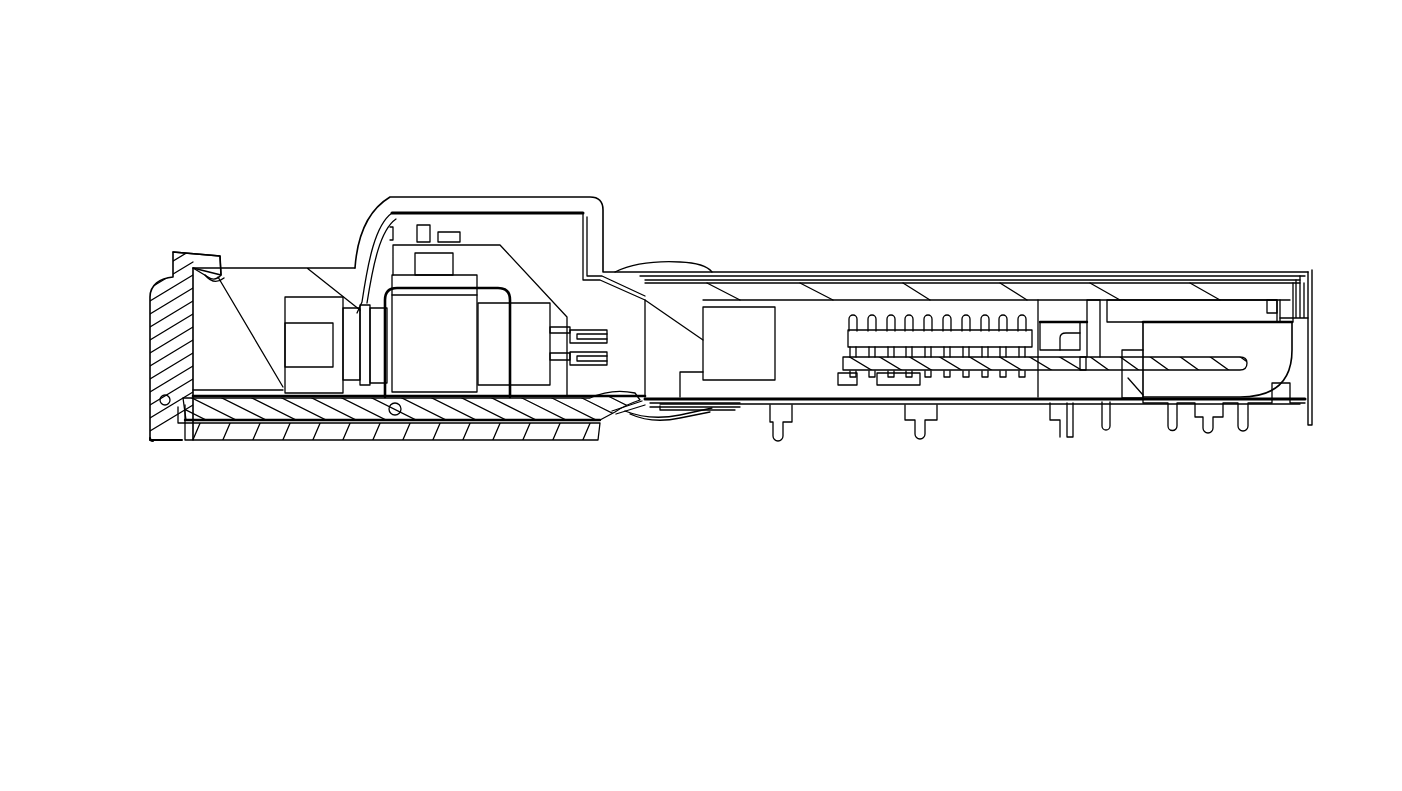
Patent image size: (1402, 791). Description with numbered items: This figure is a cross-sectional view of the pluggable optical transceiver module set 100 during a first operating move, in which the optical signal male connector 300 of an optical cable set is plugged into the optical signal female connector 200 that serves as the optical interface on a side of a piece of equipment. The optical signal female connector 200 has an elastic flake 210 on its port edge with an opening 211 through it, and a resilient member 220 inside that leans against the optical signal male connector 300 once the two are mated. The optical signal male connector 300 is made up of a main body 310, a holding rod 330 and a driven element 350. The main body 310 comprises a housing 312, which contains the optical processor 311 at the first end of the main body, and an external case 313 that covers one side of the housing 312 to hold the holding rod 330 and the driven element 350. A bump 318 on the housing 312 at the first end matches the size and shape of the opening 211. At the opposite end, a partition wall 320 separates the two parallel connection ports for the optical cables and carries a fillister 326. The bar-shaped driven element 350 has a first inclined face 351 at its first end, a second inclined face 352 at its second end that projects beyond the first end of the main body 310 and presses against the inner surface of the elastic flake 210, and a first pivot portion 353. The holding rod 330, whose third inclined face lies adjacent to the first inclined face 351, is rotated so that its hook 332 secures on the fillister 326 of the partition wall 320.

The pluggable optical transceiver module set 100 is at (133, 72).
The optical signal female connector 200 is at (998, 247).
The elastic flake 210 is at (693, 410).
The opening 211 is at (677, 413).
The resilient member 220 is at (1307, 318).
The optical signal male connector 300 is at (488, 174).
The main body 310 is at (603, 216).
The optical processor 311 is at (903, 336).
The housing 312 is at (408, 210).
The external case 313 is at (488, 437).
The bump 318 is at (657, 413).
The partition wall 320 is at (203, 317).
The fillister 326 is at (218, 277).
The holding rod 330 is at (148, 376).
The hook 332 is at (195, 250).
The driven element 350 is at (303, 425).
The first inclined face 351 is at (187, 413).
The second inclined face 352 is at (610, 414).
The first pivot portion 353 is at (395, 425).